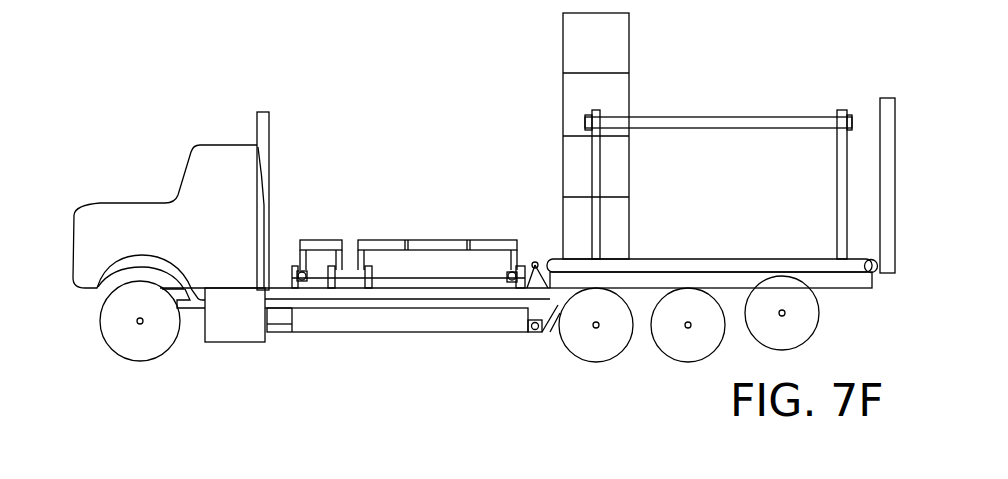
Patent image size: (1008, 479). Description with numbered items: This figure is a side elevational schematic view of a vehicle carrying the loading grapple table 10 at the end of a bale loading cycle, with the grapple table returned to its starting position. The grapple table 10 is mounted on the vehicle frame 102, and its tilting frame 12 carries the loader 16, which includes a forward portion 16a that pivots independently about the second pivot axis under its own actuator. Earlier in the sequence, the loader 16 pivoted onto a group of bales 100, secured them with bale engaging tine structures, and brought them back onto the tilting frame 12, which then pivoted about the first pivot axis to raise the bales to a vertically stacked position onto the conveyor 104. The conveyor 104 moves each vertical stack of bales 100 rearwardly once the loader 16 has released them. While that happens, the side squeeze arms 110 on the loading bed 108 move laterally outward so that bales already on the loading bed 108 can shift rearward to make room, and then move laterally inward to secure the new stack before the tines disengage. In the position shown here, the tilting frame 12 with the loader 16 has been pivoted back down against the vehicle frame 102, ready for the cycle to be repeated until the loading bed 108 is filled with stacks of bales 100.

The grapple table 10 is at (398, 221).
The tilting frame 12 is at (430, 277).
The loader 16 is at (418, 239).
The forward portion 16a is at (326, 221).
The group of bales 100 is at (630, 50).
The vehicle frame 102 is at (423, 308).
The conveyor 104 is at (737, 258).
The loading bed 108 is at (847, 288).
The side squeeze arms 110 is at (747, 113).